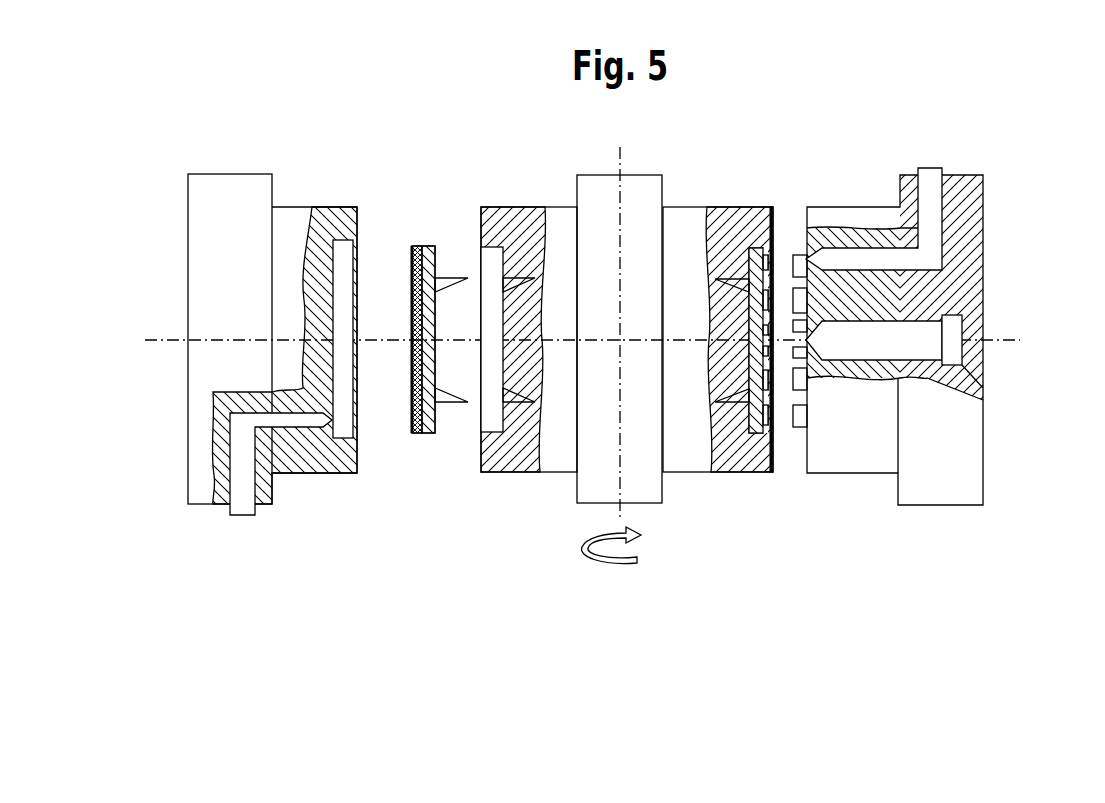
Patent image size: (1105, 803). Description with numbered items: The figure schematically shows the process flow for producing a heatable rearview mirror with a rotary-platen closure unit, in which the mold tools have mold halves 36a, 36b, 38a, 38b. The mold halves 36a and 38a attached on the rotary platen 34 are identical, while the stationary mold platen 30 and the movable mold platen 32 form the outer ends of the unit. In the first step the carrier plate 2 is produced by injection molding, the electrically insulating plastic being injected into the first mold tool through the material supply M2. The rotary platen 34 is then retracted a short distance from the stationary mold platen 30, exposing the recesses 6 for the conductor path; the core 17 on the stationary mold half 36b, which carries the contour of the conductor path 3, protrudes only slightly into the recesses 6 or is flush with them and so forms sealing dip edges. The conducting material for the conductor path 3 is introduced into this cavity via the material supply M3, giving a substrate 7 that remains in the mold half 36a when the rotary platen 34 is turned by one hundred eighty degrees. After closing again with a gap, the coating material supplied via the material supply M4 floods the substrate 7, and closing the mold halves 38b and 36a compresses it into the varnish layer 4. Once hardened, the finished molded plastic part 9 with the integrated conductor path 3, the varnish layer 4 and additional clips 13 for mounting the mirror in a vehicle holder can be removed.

The movable mold platen 32 is at (232, 192).
The mold half 38b is at (293, 217).
The material supply M4 is at (243, 514).
The substrate 7 is at (565, 336).
The conductor path 3 is at (416, 246).
The carrier plate 2 is at (428, 246).
The varnish layer 4 is at (412, 300).
The clips 13 is at (451, 282).
The molded plastic part 9 is at (418, 437).
The mold half 38a is at (560, 208).
The rotary platen 34 is at (600, 190).
The mold half 36a is at (683, 215).
The mold half 36b is at (847, 215).
The core 17 is at (800, 255).
The recesses 6 is at (763, 420).
The material supply M3 is at (858, 255).
The material supply M2 is at (912, 350).
The stationary mold platen 30 is at (923, 315).